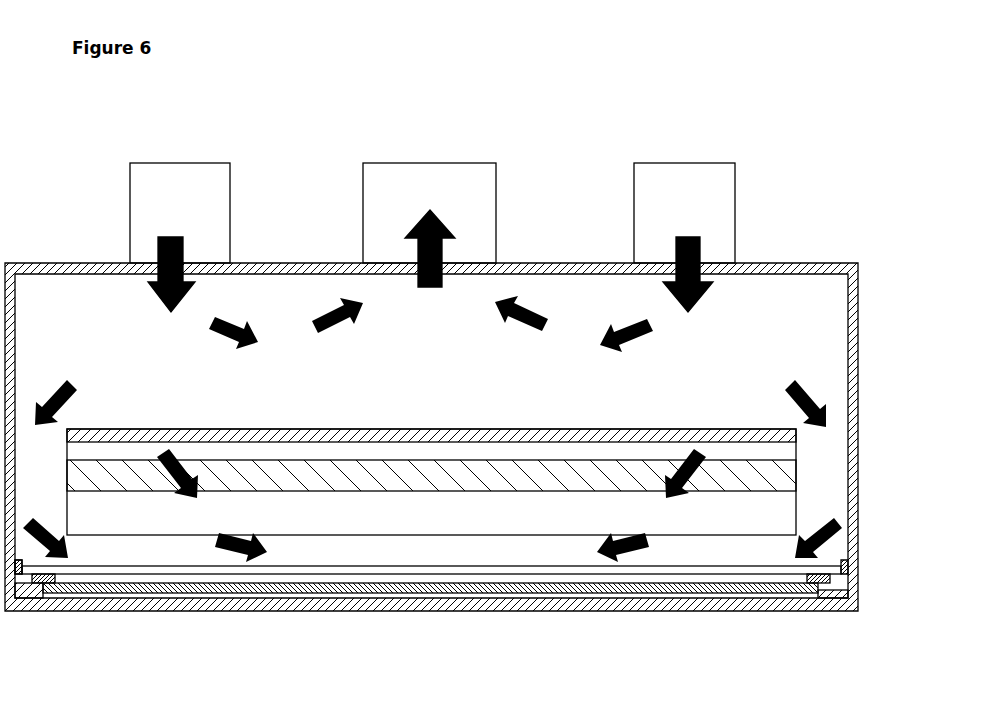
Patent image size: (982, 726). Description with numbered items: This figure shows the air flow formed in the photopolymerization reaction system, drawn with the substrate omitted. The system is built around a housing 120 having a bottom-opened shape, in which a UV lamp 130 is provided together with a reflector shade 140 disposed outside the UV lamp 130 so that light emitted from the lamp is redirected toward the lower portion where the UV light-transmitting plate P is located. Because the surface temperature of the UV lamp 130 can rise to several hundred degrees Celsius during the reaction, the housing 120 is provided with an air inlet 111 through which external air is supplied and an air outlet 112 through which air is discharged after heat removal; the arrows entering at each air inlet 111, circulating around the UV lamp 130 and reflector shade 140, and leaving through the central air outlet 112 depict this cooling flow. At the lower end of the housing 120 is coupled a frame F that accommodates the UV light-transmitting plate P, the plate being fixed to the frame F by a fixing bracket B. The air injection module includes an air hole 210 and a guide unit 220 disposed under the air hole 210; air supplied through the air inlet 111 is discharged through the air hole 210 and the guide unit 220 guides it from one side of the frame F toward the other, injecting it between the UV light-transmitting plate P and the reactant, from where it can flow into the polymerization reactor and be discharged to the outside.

The air inlet 111 is at (193, 175).
The air outlet 112 is at (482, 175).
The housing 120 is at (858, 302).
The UV lamp 130 is at (796, 471).
The reflector shade 140 is at (796, 435).
The air hole 210 is at (562, 598).
The guide unit 220 is at (193, 613).
The UV light-transmitting plate P is at (683, 590).
The fixing bracket B is at (823, 590).
The frame F is at (32, 590).